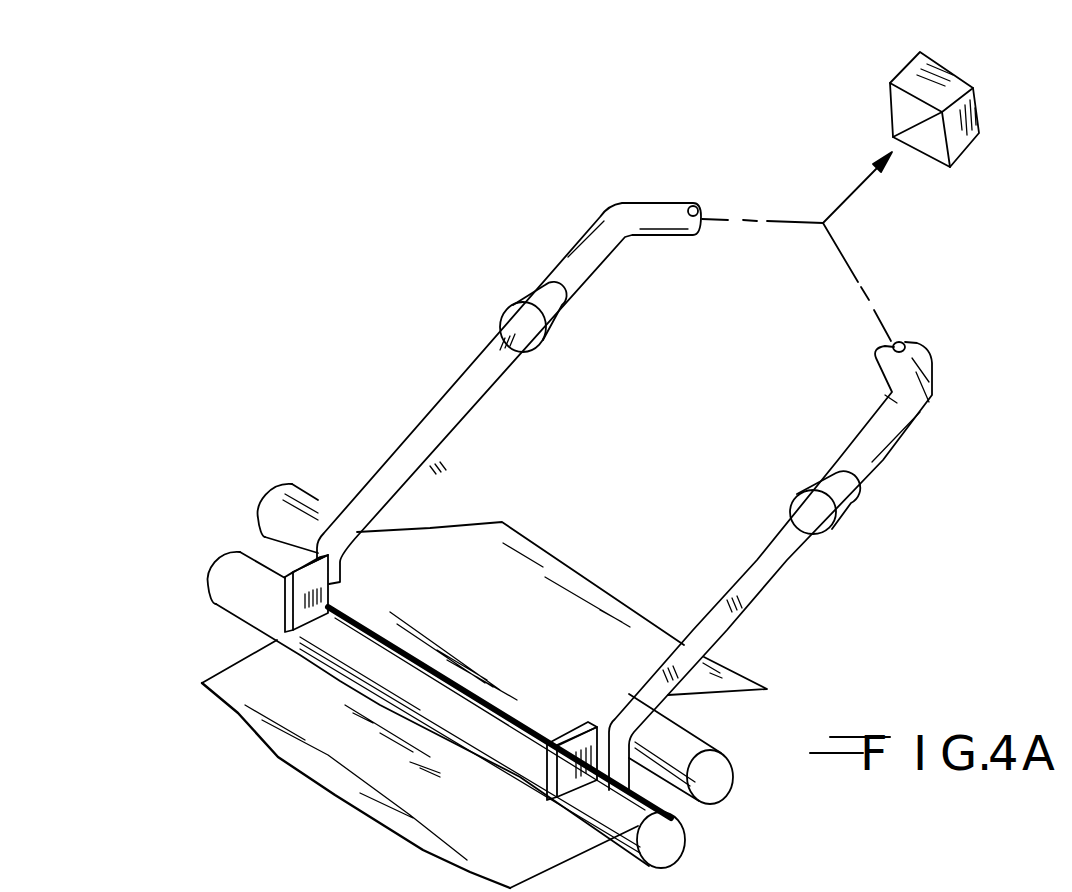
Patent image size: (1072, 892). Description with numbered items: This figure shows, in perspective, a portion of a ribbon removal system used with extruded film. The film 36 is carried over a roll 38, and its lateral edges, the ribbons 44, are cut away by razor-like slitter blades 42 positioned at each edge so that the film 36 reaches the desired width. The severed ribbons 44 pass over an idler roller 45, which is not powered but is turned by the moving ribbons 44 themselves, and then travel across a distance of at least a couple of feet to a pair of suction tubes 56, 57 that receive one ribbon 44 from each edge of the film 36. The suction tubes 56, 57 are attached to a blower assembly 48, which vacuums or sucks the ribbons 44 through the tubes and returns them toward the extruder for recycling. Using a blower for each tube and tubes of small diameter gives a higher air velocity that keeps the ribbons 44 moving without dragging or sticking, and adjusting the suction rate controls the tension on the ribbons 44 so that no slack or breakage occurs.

The film 36 is at (293, 763).
The roll 38 is at (212, 575).
The slitter blade 42 is at (310, 632).
The ribbon 44 is at (463, 413).
The idler roller 45 is at (266, 487).
The blower assembly 48 is at (966, 155).
The suction tube 56 is at (807, 490).
The suction tube 57 is at (562, 318).